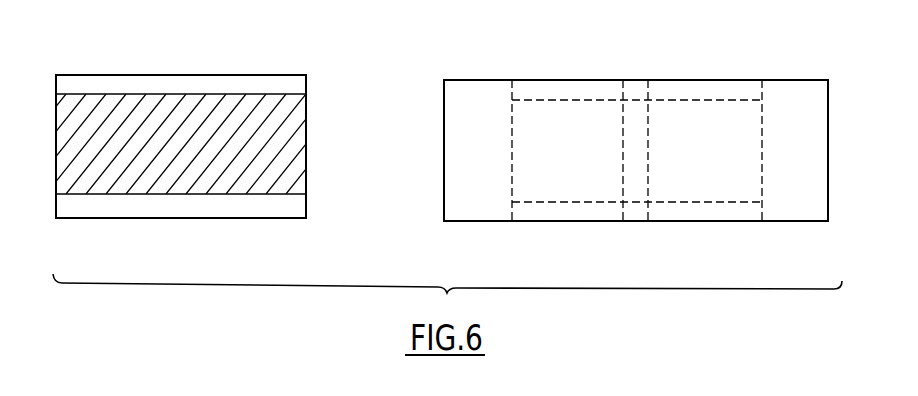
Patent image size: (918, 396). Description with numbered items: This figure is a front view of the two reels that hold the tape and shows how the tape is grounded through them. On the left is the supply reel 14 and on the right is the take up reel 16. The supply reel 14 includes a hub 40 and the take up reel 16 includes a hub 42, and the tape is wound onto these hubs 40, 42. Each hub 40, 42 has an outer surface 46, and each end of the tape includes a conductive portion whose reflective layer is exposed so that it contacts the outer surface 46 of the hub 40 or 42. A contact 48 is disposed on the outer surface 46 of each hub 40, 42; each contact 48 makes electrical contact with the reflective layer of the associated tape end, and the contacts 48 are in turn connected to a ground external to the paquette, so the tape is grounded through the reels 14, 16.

The supply reel 14 is at (107, 74).
The take up reel 16 is at (488, 80).
The hub 40 is at (215, 82).
The hub 42 is at (773, 93).
The outer surface 46 is at (306, 109).
The contact 48 is at (282, 168).